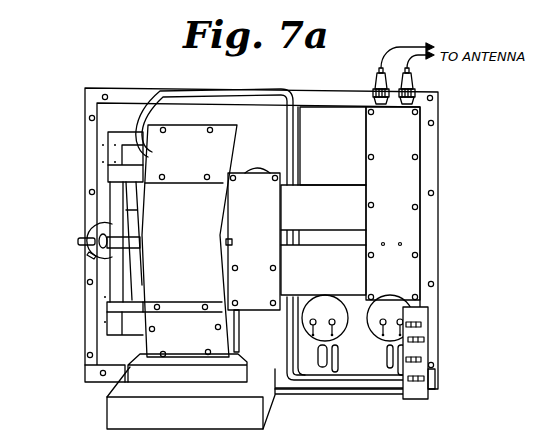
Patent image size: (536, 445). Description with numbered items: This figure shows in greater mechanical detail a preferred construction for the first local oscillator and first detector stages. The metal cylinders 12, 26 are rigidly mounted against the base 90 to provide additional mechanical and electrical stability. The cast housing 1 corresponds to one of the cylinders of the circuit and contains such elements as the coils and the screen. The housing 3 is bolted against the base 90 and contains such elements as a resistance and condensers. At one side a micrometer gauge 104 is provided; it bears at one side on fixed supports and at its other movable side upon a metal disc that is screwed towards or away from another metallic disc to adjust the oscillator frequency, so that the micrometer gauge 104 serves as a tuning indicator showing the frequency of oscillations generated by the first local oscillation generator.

The cast housing 1 is at (403, 155).
The housing 3 is at (263, 298).
The metal cylinder 12 is at (320, 192).
The metal cylinder 26 is at (340, 262).
The base 90 is at (232, 146).
The micrometer gauge 104 is at (100, 224).